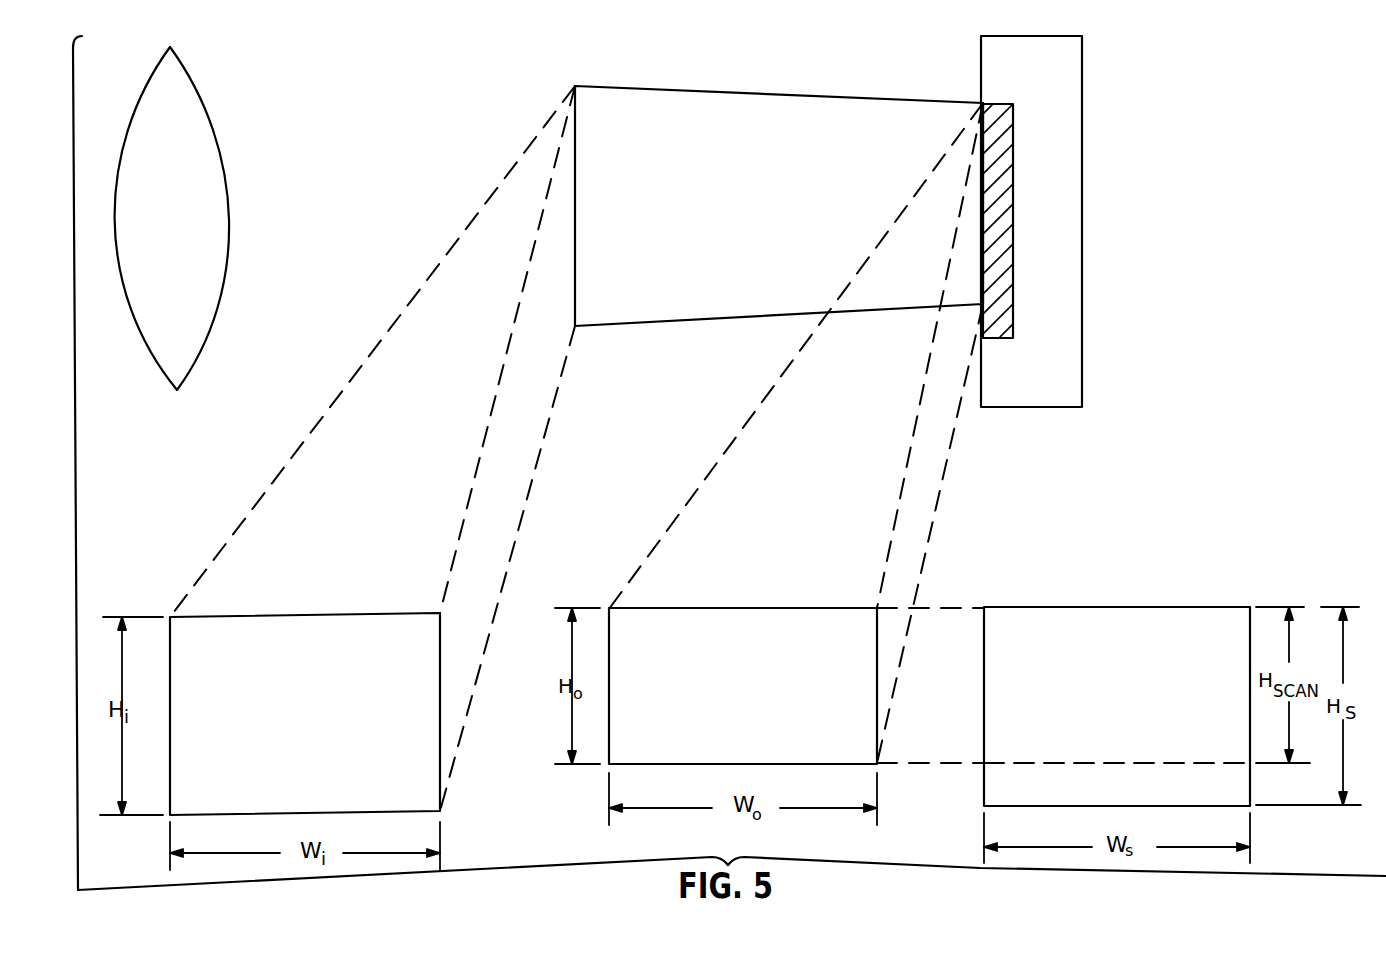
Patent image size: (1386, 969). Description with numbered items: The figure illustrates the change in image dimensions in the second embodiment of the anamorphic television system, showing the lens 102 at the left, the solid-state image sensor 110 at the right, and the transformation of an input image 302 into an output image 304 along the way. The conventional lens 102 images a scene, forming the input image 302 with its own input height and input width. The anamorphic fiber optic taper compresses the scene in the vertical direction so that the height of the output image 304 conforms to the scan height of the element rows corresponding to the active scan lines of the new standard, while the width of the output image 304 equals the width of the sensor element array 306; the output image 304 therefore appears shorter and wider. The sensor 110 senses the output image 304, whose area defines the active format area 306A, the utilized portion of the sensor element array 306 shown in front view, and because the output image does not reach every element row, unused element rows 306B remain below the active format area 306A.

The lens 102 is at (203, 98).
The solid-state image sensor 110 is at (1082, 70).
The input image 302 is at (300, 614).
The output image 304 is at (718, 608).
The sensor element array 306 is at (1013, 145).
The active format area 306A is at (984, 660).
The unused element rows 306B is at (984, 790).